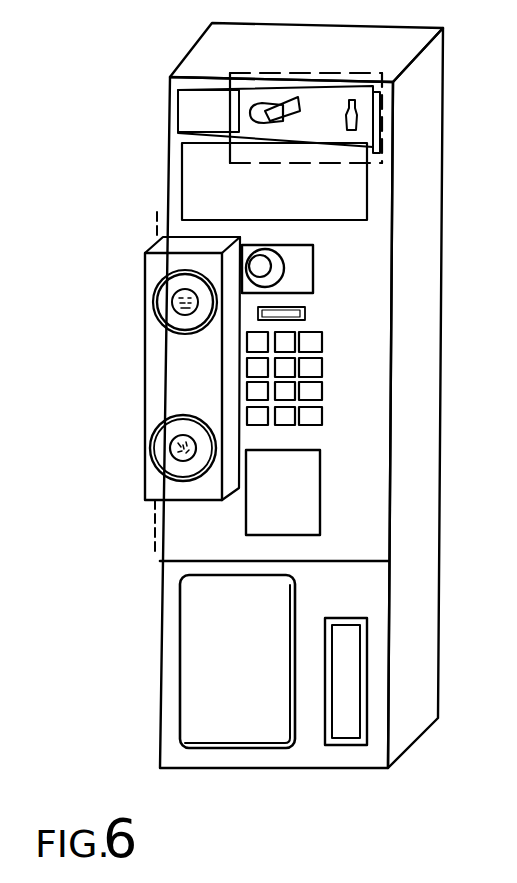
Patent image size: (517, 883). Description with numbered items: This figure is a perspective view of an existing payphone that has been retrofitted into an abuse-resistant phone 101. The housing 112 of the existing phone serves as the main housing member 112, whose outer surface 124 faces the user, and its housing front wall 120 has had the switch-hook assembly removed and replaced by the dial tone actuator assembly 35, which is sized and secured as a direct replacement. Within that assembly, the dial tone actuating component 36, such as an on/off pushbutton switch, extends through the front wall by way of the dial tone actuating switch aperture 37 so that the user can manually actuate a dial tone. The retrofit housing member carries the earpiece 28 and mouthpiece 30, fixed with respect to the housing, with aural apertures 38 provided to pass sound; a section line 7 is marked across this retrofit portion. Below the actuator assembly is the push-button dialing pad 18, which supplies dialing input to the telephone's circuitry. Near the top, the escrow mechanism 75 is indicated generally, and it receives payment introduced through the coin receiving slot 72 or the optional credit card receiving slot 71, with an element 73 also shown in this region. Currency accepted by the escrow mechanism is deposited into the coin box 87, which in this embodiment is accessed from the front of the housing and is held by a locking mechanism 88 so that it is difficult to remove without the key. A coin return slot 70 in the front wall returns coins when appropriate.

The abuse-resistant phone 101 is at (158, 140).
The housing 112 is at (407, 473).
The housing front wall 120 is at (378, 517).
The section line 7- 7 is at (158, 190).
The earpiece 28 is at (168, 292).
The aural apertures 38 is at (163, 333).
The mouthpiece 30 is at (168, 468).
The dial tone actuator assembly 35 is at (302, 283).
The dial tone actuating component 36 is at (262, 248).
The dial tone actuating switch aperture 37 is at (290, 267).
The push-button dialing pad 18 is at (338, 373).
The outer surface 124 is at (372, 490).
The coin box 87 is at (200, 705).
The locking mechanism 88 is at (232, 655).
The coin return slot 70 is at (348, 698).
The escrow mechanism 75 is at (252, 92).
The handset 73 is at (272, 102).
The coin receiving slot 72 is at (347, 102).
The credit card receiving slot 71 is at (375, 92).